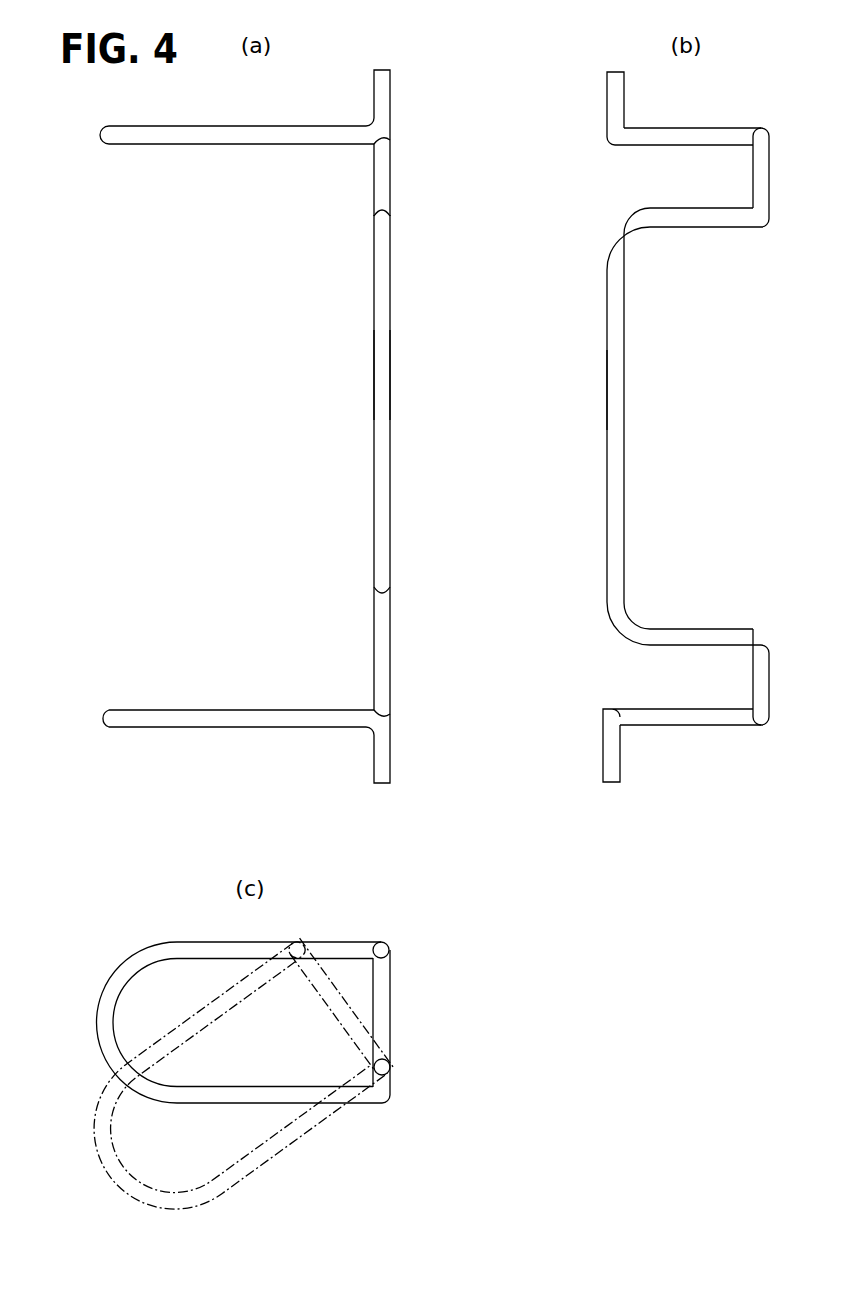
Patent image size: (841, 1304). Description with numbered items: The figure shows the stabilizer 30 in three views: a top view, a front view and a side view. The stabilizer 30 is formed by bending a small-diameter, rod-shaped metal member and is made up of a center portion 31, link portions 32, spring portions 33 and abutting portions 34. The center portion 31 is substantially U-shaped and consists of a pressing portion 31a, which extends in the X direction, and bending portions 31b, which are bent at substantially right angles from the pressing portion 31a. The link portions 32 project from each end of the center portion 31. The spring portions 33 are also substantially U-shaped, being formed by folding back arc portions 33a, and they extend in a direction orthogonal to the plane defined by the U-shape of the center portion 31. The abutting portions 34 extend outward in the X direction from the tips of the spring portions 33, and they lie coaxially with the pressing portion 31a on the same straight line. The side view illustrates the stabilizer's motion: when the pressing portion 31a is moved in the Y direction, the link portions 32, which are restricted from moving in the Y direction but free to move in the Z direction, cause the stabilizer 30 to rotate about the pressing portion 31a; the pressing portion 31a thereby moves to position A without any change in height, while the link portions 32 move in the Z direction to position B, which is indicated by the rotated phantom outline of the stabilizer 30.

The stabilizer 30 is at (322, 258).
The center portion 31 is at (390, 312).
The pressing portion 31a is at (390, 364).
The bending portions 31b is at (693, 227).
The link portions 32 is at (390, 175).
The spring portions 33 is at (190, 144).
The arc portions 33a is at (114, 1020).
The abutting portions 34 is at (390, 92).
The position A is at (301, 935).
The position B is at (398, 1067).